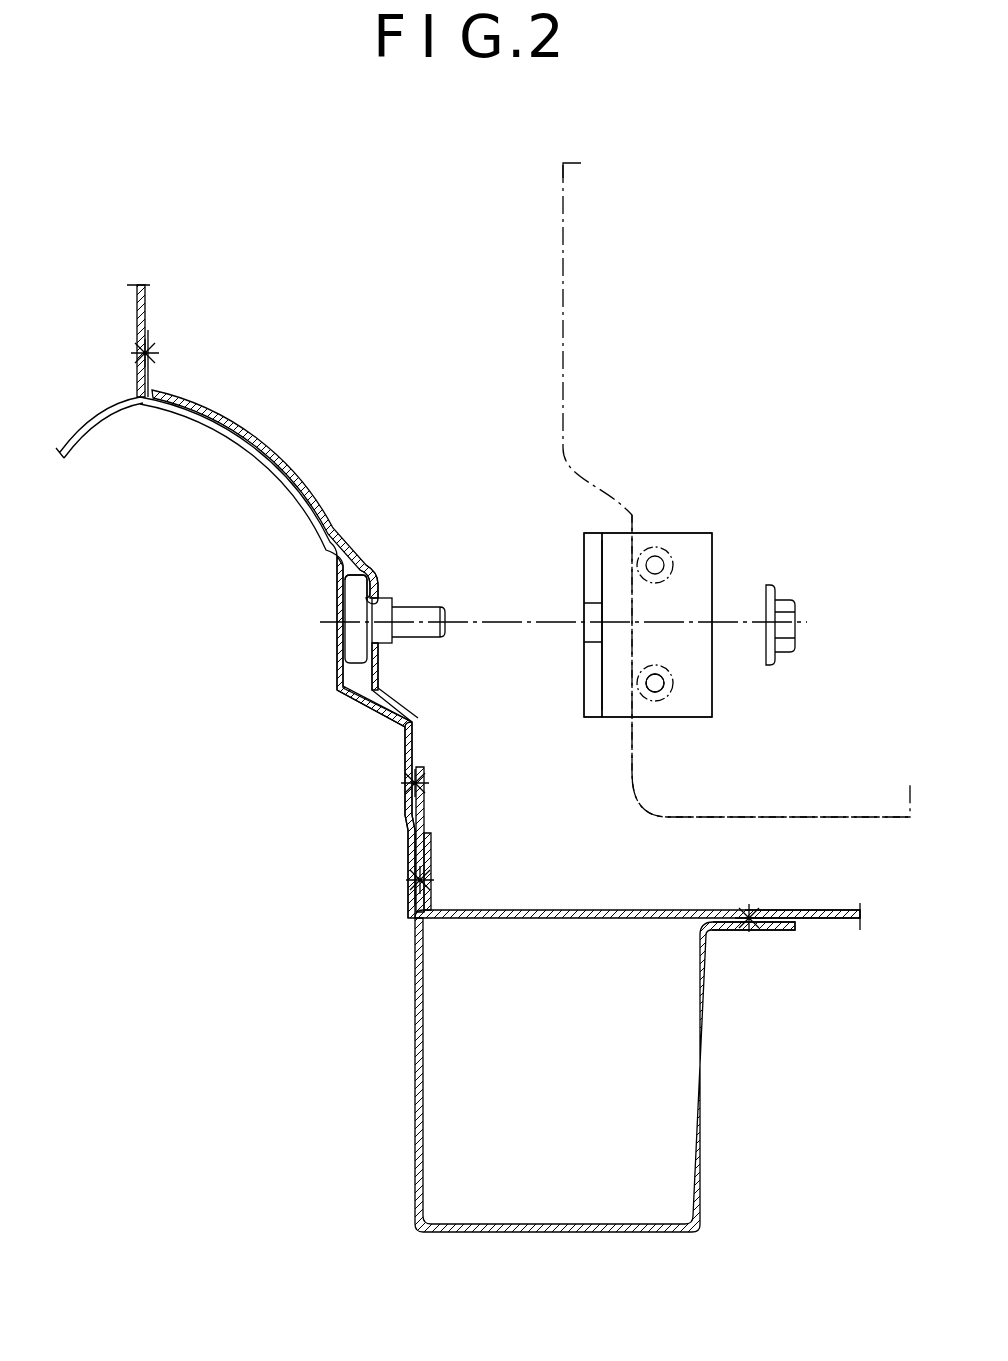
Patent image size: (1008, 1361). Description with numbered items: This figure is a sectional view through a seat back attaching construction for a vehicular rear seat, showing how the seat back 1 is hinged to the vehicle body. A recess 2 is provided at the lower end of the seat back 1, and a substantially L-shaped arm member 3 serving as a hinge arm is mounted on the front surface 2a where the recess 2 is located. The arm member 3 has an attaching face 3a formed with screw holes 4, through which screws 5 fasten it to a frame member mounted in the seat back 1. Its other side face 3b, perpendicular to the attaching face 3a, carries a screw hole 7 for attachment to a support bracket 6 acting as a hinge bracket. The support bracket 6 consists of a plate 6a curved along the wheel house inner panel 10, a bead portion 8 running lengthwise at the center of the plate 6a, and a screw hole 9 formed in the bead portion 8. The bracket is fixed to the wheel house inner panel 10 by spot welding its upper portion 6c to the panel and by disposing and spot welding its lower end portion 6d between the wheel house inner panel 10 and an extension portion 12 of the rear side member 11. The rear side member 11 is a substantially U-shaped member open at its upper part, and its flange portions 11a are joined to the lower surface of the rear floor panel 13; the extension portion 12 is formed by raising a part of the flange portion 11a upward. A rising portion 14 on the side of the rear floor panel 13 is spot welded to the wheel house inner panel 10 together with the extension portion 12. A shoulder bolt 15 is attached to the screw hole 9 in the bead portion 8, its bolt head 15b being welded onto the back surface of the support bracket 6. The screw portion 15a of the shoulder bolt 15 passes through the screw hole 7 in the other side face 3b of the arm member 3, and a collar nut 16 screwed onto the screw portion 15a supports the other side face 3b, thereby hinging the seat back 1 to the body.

The seat back 1 is at (563, 238).
The recess 2 is at (630, 512).
The front surface 2a is at (657, 780).
The arm member 3 is at (703, 530).
The attaching face 3a is at (705, 562).
The other side face 3b is at (584, 562).
The screw holes 4 is at (660, 690).
The screws 5 is at (658, 546).
The support bracket 6 is at (358, 558).
The plate 6a is at (305, 478).
The upper portion 6c is at (231, 418).
The lower end portion 6d is at (415, 735).
The screw hole 7 is at (600, 635).
The bead portion 8 is at (380, 680).
The screw hole 9 is at (383, 600).
The wheel house inner panel 10 is at (383, 732).
The rear side member 11 is at (700, 1112).
The flange portions 11a is at (772, 930).
The extension portion 12 is at (428, 797).
The rear floor panel 13 is at (835, 915).
The rising portion 14 is at (430, 872).
The shoulder bolt 15 is at (353, 650).
The screw portion 15a is at (430, 607).
The bolt head 15b is at (352, 590).
The collar nut 16 is at (797, 632).